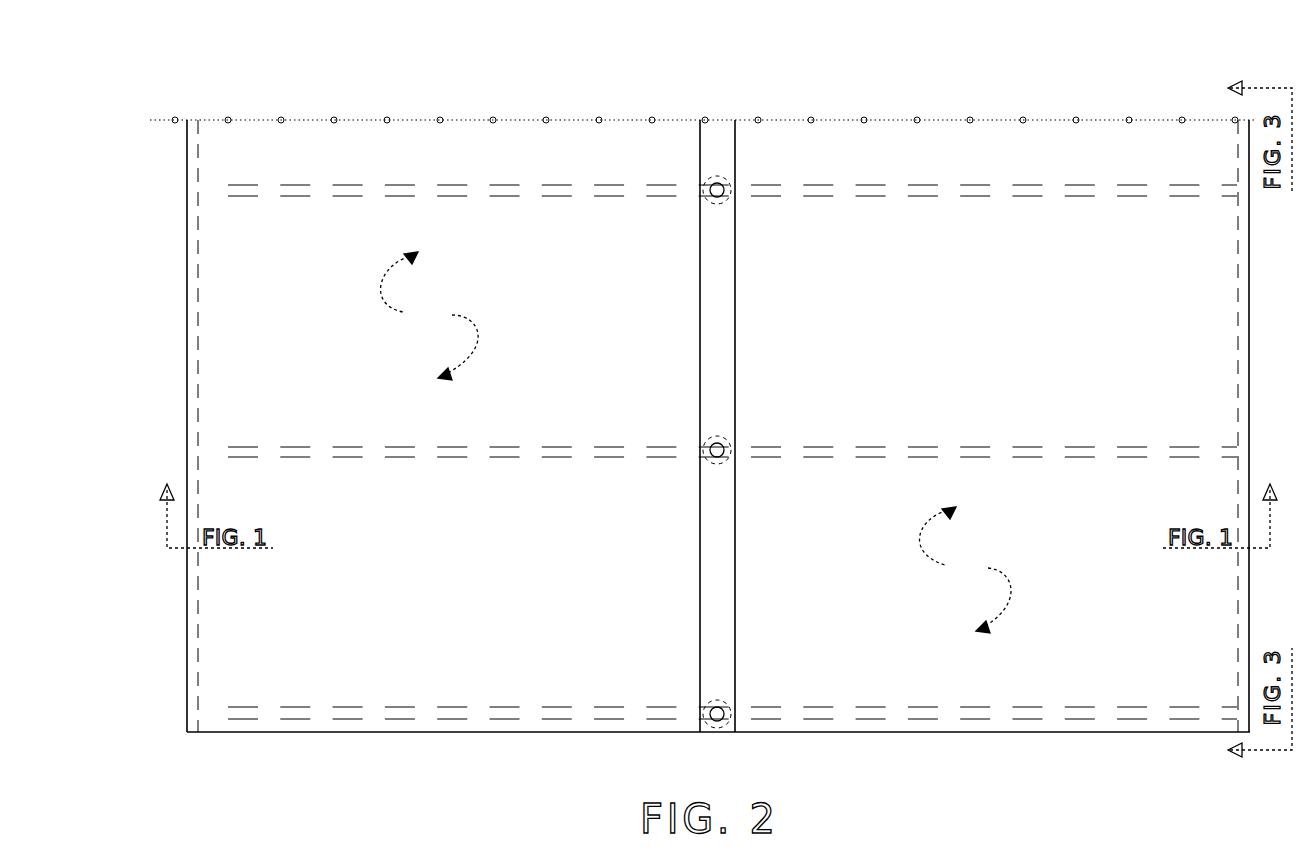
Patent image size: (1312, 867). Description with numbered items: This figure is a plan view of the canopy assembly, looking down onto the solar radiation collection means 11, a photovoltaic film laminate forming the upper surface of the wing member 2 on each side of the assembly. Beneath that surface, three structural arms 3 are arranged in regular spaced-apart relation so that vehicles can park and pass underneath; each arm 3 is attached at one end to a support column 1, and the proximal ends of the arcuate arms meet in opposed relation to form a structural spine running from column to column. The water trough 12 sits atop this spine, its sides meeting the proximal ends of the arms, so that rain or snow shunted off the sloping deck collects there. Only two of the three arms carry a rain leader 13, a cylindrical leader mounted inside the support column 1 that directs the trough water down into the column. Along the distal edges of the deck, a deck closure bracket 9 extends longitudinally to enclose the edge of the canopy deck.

The support column 1 is at (703, 190).
The wing member 2 is at (478, 776).
The structural arm 3 is at (920, 188).
The deck closure bracket 9 is at (185, 365).
The solar radiation collection means 11 is at (696, 442).
The water trough 12 is at (700, 420).
The rain leader 13 is at (705, 187).